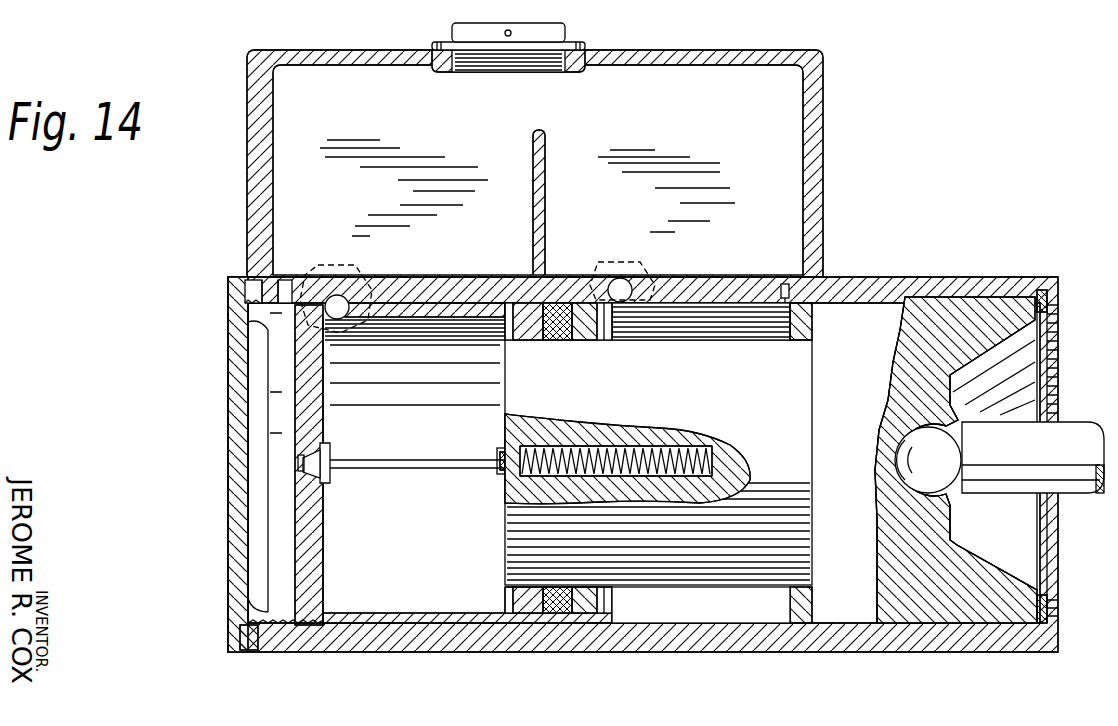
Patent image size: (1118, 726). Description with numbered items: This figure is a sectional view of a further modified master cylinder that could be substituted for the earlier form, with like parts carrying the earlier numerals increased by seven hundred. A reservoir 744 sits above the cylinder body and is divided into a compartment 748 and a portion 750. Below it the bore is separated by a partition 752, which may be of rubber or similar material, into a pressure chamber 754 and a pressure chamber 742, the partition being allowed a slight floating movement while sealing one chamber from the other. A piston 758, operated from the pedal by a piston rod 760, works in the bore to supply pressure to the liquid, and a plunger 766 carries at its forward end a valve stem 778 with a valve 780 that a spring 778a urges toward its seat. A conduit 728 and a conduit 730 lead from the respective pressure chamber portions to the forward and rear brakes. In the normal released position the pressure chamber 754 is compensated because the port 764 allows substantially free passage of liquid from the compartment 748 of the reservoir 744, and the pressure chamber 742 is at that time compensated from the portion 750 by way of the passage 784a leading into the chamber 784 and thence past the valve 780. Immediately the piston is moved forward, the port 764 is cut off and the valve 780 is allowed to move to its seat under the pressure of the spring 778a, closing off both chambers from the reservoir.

The reservoir 744 is at (582, 86).
The compartment of the reservoir 748 is at (783, 178).
The portion of the reservoir 750 is at (295, 192).
The conduit 728 is at (338, 293).
The conduit 730 is at (620, 287).
The port 764 is at (786, 295).
The piston 758 is at (868, 318).
The piston rod 760 is at (1100, 412).
The passage 784a is at (268, 282).
The chamber 784 is at (253, 512).
The valve 780 is at (331, 464).
The valve stem 778 is at (413, 468).
The spring 778a is at (622, 468).
The pressure chamber 742 is at (437, 597).
The partition 752 is at (557, 612).
The plunger 766 is at (740, 568).
The pressure chamber 754 is at (757, 613).